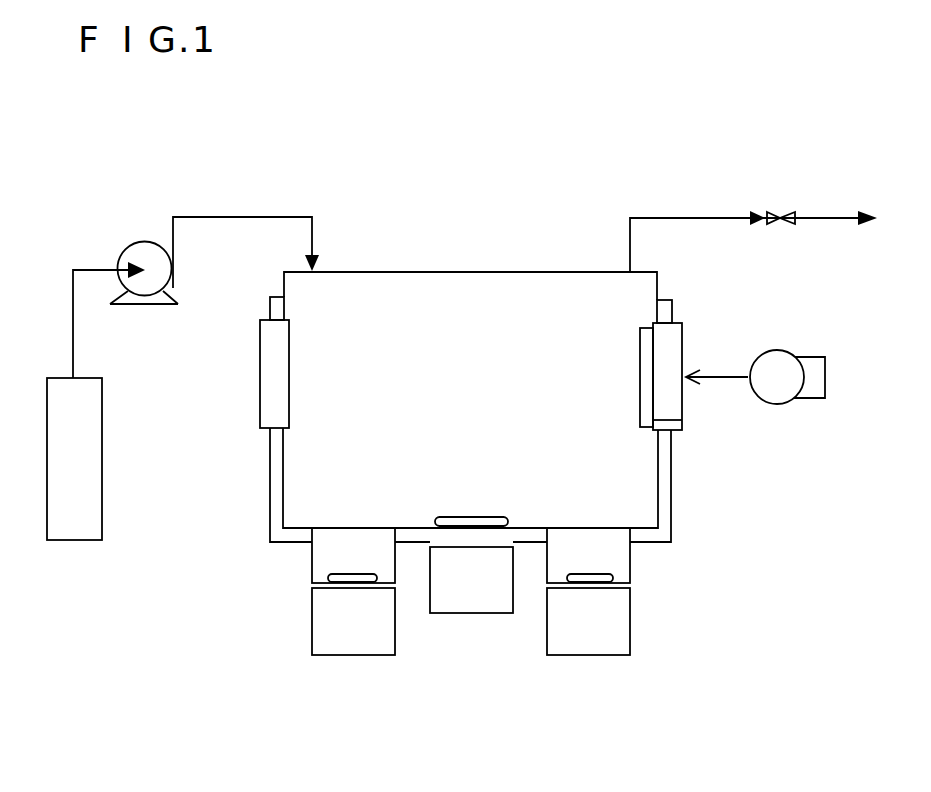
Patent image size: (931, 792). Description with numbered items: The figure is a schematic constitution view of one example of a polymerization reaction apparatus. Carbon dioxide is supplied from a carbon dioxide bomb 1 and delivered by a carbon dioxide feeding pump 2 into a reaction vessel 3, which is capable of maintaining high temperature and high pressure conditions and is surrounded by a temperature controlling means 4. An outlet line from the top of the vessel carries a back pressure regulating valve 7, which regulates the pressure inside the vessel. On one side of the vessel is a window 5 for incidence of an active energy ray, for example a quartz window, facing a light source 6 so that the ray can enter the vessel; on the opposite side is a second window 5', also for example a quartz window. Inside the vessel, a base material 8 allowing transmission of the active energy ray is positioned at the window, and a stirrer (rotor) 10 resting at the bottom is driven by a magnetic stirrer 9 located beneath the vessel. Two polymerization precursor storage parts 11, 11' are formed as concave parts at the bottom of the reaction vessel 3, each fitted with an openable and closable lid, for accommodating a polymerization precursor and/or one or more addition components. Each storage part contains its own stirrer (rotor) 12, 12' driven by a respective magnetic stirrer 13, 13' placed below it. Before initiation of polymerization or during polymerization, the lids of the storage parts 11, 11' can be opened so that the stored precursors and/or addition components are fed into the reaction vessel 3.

The carbon dioxide bomb 1 is at (97, 498).
The carbon dioxide feeding pump 2 is at (160, 281).
The reaction vessel 3 is at (652, 517).
The temperature controlling means 4 is at (665, 497).
The window for incidence of an active energy ray 5 is at (684, 365).
The window 5' is at (232, 362).
The light source 6 is at (783, 372).
The back pressure regulating valve 7 is at (795, 212).
The active energy ray transmission base material 8 is at (656, 418).
The magnetic stirrer 9 is at (465, 600).
The stirrer (rotor) 10 is at (437, 521).
The polymerization precursor storage part 11 is at (634, 555).
The polymerization precursor storage part 11' is at (303, 555).
The stirrer (rotor) 12 is at (644, 580).
The stirrer (rotor) 12' is at (294, 577).
The magnetic stirrer 13 is at (634, 623).
The magnetic stirrer 13' is at (303, 621).